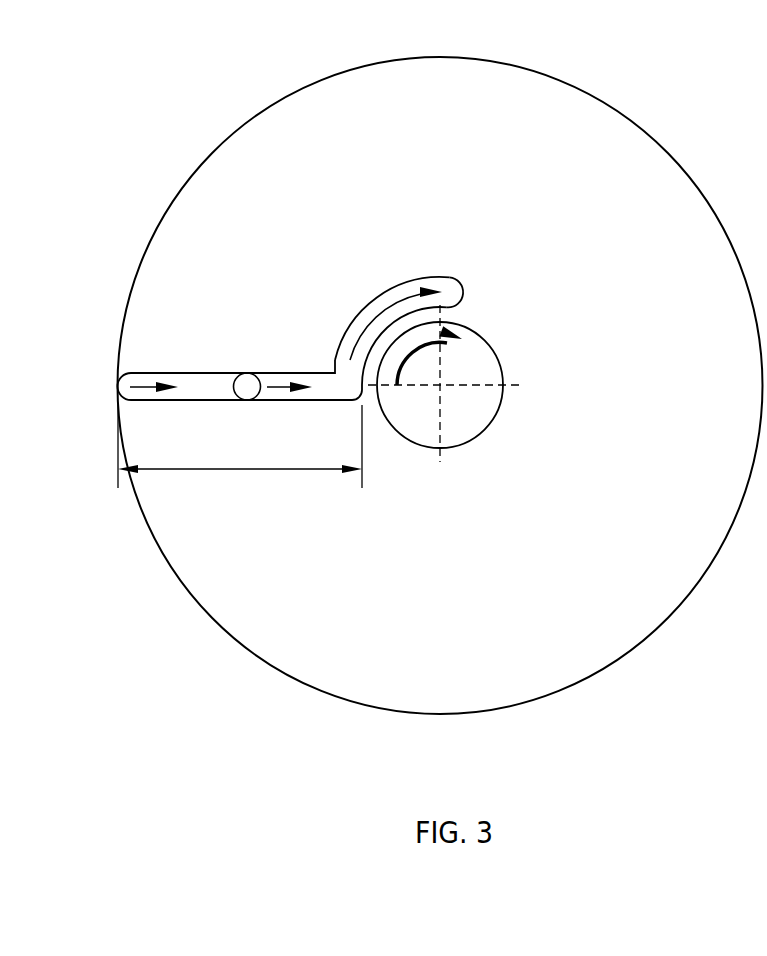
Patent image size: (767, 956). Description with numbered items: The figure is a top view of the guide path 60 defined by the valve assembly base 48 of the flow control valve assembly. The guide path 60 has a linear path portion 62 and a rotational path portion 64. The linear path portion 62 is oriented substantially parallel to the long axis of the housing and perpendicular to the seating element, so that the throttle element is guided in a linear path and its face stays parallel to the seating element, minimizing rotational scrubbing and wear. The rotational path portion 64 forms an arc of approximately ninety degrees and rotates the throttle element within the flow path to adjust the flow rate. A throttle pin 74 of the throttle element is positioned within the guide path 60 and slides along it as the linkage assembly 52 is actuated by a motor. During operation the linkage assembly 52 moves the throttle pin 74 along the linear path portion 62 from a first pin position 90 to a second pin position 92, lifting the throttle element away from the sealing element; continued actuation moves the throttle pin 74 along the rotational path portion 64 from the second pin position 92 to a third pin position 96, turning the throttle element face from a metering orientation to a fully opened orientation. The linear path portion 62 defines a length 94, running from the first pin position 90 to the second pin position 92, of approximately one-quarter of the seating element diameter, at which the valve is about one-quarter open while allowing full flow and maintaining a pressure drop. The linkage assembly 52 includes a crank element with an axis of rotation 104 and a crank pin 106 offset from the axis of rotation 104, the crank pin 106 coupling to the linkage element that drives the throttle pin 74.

The valve assembly base 48 is at (673, 153).
The linkage assembly 52 is at (497, 381).
The guide path 60 is at (407, 299).
The linear path portion 62 is at (240, 386).
The rotational path portion 64 is at (356, 317).
The throttle pin 74 is at (247, 373).
The first pin position 90 is at (128, 412).
The second pin position 92 is at (346, 410).
The length 94 is at (243, 469).
The third pin position 96 is at (455, 298).
The axis of rotation 104 is at (455, 391).
The crank pin 106 is at (473, 352).